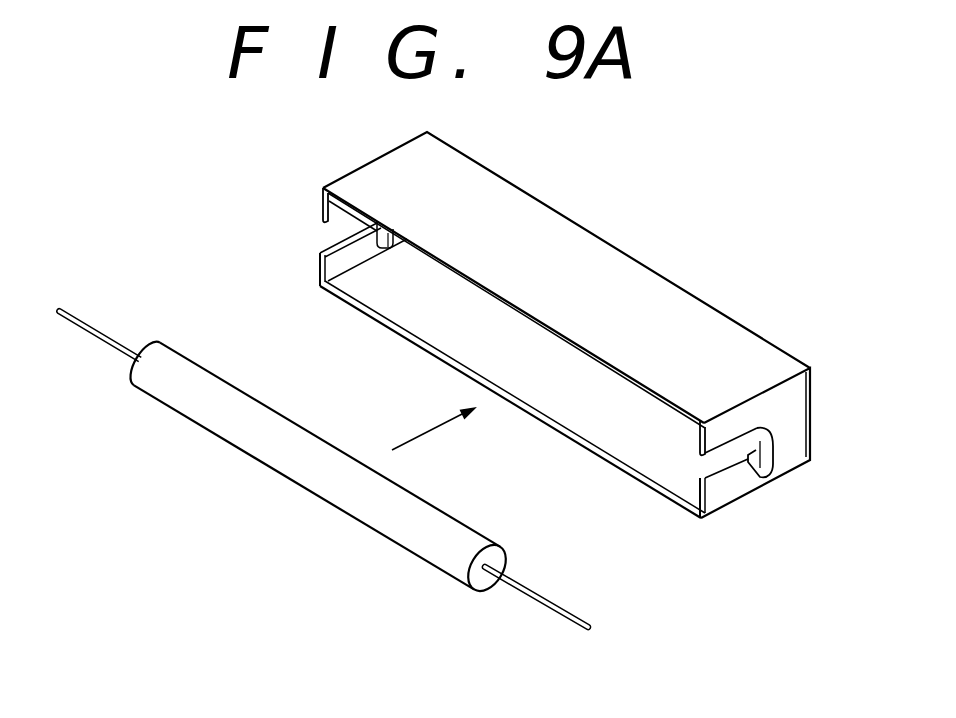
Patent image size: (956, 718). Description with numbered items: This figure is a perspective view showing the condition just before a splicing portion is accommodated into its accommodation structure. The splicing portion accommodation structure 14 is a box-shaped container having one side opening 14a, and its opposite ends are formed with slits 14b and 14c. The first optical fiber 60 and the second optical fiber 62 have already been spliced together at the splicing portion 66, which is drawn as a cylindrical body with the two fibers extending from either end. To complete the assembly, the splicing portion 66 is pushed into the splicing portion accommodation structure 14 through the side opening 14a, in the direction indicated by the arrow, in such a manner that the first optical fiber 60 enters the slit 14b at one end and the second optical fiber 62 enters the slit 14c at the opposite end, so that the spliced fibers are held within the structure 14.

The splicing portion accommodation structure 14 is at (517, 344).
The side opening 14a is at (587, 421).
The slit 14b is at (345, 224).
The slit 14c is at (722, 456).
The first optical fiber 60 is at (118, 352).
The second optical fiber 62 is at (540, 602).
The splicing portion 66 is at (330, 478).